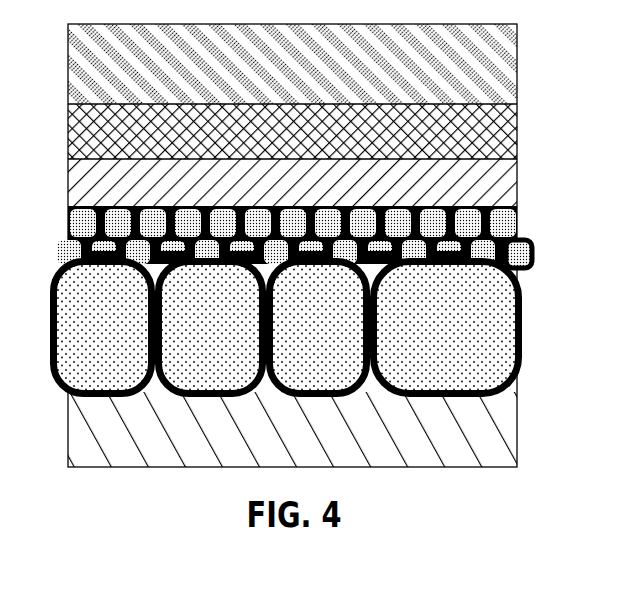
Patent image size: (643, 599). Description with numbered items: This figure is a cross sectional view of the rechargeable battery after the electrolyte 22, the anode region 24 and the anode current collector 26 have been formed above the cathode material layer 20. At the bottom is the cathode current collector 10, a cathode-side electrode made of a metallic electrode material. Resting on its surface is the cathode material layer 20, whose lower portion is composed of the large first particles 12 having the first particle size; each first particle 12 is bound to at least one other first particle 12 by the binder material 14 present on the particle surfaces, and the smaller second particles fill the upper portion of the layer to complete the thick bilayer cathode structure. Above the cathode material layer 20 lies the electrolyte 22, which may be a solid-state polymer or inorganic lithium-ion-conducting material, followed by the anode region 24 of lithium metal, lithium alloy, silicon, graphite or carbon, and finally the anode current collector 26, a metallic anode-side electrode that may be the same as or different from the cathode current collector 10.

The cathode current collector 10 is at (277, 441).
The first particles 12 is at (89, 338).
The binder material 14 is at (340, 398).
The cathode material layer 20 is at (548, 207).
The electrolyte 22 is at (277, 197).
The anode region 24 is at (277, 146).
The anode current collector 26 is at (277, 81).